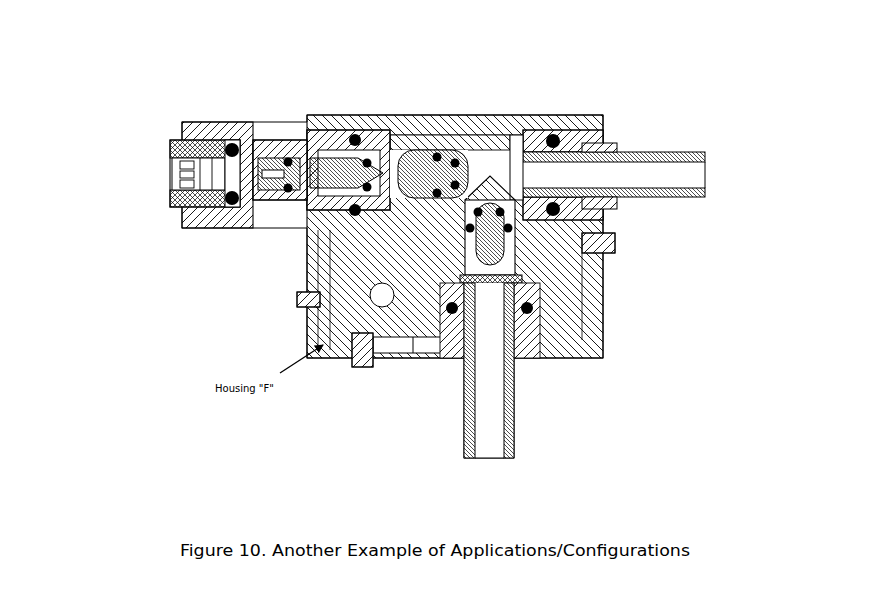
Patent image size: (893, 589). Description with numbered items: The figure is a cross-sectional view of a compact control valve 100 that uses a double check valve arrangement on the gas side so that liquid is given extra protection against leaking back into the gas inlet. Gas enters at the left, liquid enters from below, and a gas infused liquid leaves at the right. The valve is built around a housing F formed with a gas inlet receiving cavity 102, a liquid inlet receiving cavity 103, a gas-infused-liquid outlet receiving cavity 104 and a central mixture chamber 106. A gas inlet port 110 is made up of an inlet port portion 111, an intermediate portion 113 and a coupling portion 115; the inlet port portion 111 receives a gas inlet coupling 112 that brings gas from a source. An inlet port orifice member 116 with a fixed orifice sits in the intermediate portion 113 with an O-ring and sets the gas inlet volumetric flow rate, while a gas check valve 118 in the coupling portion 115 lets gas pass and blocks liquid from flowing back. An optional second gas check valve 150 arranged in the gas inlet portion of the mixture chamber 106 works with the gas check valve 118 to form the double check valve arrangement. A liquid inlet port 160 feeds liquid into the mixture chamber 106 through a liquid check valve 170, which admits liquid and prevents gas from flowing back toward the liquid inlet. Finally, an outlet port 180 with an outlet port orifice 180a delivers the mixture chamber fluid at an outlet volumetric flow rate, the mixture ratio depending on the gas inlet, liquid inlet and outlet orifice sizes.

The compact control valve 100 is at (148, 44).
The gas inlet receiving cavity 102 is at (378, 208).
The liquid inlet receiving cavity 103 is at (445, 290).
The gas-infused-liquid outlet receiving cavity 104 is at (568, 133).
The mixture chamber 106 is at (507, 150).
The gas inlet port 110 is at (182, 225).
The inlet port portion 111 is at (200, 232).
The gas inlet coupling 112 is at (182, 198).
The intermediate portion 113 is at (282, 195).
The coupling portion 115 is at (352, 192).
The inlet port orifice member 116 is at (262, 170).
The gas check valve 118 is at (317, 160).
The 2nd gas check valve 150 is at (405, 145).
The liquid inlet port 160 is at (522, 326).
The liquid check valve 170 is at (520, 266).
The outlet port 180 is at (633, 153).
The outlet port orifice 180a is at (510, 172).